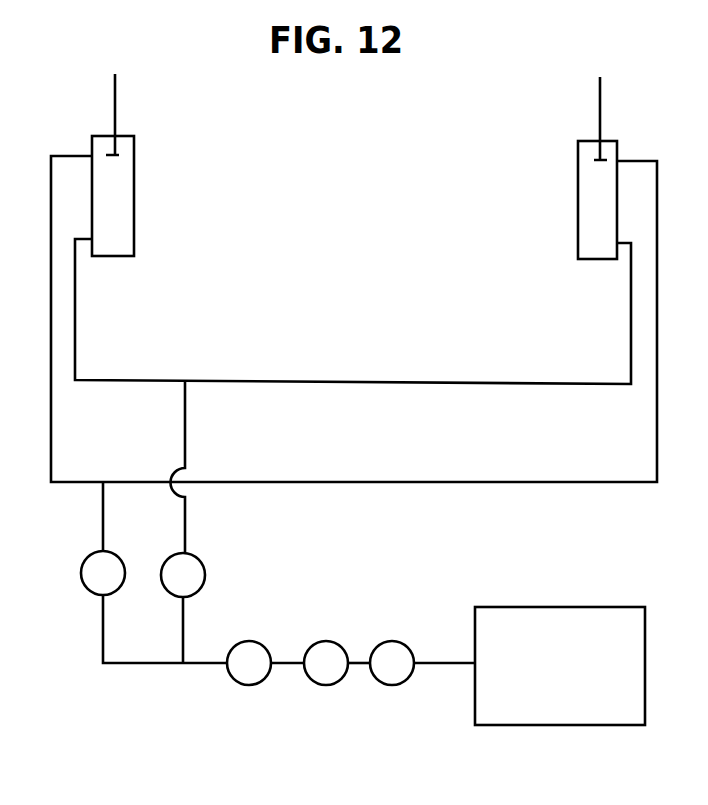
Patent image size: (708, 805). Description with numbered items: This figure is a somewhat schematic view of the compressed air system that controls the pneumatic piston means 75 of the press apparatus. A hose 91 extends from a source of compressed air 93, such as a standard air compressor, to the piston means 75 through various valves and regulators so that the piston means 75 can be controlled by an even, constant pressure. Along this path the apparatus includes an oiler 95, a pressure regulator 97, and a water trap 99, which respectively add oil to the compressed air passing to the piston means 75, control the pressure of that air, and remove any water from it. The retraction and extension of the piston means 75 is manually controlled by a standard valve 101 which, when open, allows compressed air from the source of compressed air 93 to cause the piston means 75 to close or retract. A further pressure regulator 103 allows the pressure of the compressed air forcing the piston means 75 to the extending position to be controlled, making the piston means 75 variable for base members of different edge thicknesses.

The pneumatic piston means 75 is at (146, 171).
The hose 91 is at (437, 663).
The source of compressed air 93 is at (572, 717).
The oiler 95 is at (400, 673).
The pressure regulator 97 is at (332, 674).
The water trap 99 is at (256, 675).
The valve 101 is at (84, 572).
The pressure regulator 103 is at (200, 573).